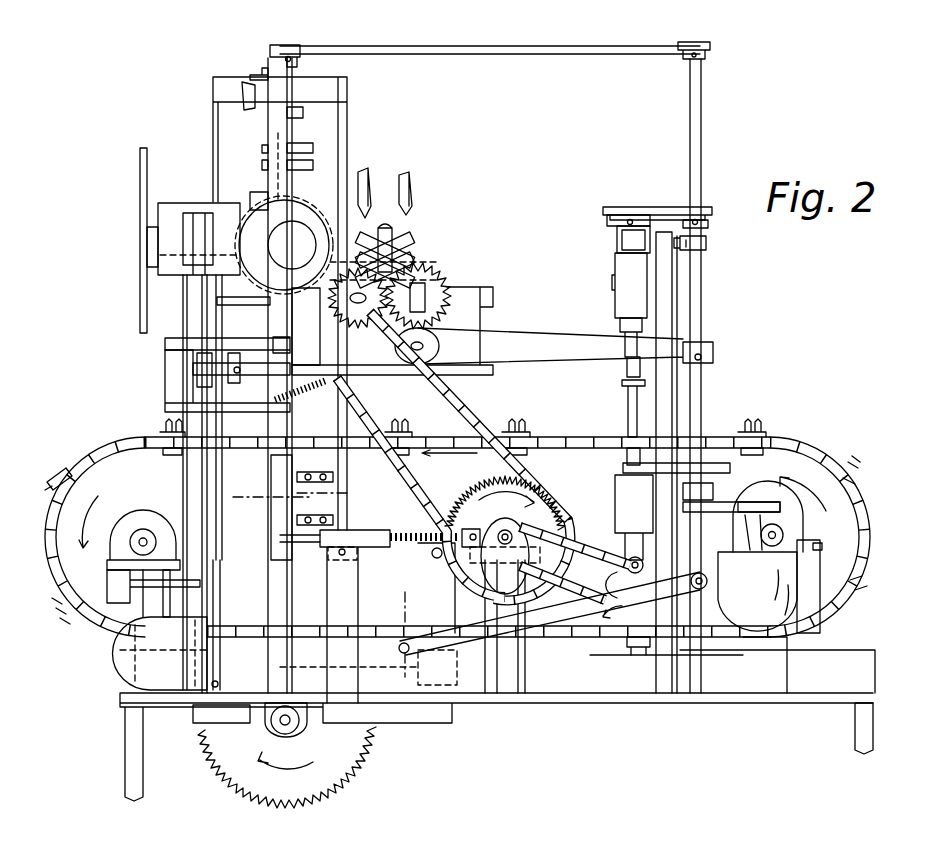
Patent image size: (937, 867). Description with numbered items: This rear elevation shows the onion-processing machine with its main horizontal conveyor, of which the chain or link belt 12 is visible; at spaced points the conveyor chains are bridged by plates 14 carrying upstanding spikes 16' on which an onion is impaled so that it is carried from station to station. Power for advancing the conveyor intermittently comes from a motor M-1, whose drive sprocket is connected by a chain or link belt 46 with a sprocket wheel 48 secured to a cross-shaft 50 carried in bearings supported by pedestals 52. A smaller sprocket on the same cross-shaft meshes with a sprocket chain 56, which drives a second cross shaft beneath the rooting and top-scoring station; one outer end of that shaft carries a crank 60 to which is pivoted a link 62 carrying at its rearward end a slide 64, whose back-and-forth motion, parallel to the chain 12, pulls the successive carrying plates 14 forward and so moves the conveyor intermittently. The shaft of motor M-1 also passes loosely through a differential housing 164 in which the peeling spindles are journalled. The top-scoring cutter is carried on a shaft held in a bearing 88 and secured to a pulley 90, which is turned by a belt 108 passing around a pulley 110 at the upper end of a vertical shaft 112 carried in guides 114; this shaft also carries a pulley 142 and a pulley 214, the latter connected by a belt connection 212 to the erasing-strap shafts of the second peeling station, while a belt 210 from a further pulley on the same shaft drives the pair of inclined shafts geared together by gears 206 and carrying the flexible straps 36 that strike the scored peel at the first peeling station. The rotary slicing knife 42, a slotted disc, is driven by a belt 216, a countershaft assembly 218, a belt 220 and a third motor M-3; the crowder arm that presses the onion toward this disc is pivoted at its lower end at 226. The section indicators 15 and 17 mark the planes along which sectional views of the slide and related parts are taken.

The belt connection 212 is at (500, 56).
The pulley 214 is at (698, 44).
The vertical shaft 112 is at (692, 105).
The belt 108 is at (678, 197).
The pulley 90 is at (632, 190).
The pulley 110 is at (707, 225).
The guides 114 is at (706, 244).
The bearing 88 is at (618, 269).
The pulley 142 is at (727, 474).
The belt 210 is at (573, 327).
The motor M-1 is at (247, 375).
The differential housing 164 is at (320, 203).
The rotary slicing knife 42 is at (140, 189).
The flexible straps 36 is at (437, 253).
The gears 206 is at (443, 287).
The belt 216 is at (202, 313).
The countershaft assembly 218 is at (197, 370).
The belt 220 is at (228, 470).
The section line 17 is at (251, 510).
The conveyor chain 12 is at (120, 437).
The upstanding spikes 16' is at (60, 466).
The plates 14 is at (47, 490).
The third motor M-3 is at (159, 653).
The crowder arm pivot 226 is at (218, 684).
The pedestals 52 is at (510, 675).
The section line 15 is at (408, 606).
The sprocket wheel 48 is at (537, 508).
The cross-shaft 50 is at (511, 531).
The chain 46 is at (461, 414).
The link 62 is at (560, 613).
The sprocket chain 56 is at (618, 564).
The crank 60 is at (702, 571).
The slide 64 is at (392, 648).